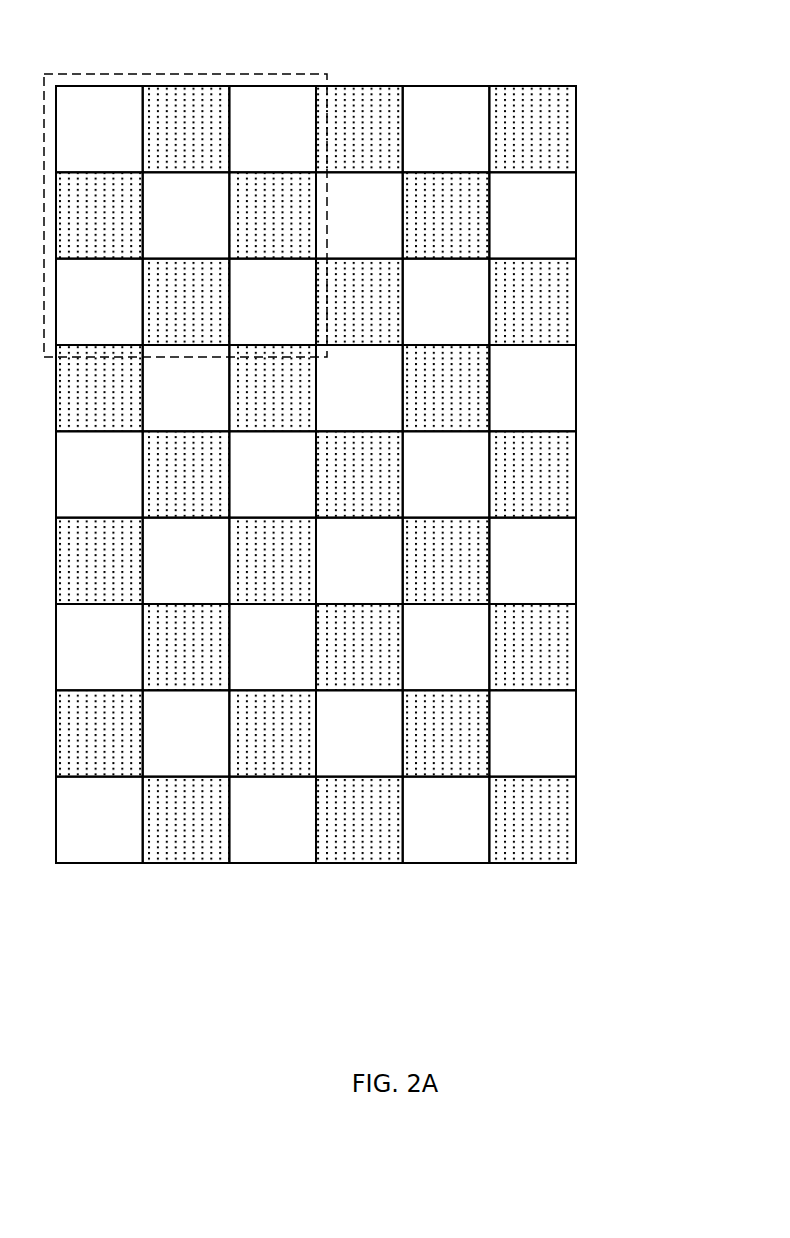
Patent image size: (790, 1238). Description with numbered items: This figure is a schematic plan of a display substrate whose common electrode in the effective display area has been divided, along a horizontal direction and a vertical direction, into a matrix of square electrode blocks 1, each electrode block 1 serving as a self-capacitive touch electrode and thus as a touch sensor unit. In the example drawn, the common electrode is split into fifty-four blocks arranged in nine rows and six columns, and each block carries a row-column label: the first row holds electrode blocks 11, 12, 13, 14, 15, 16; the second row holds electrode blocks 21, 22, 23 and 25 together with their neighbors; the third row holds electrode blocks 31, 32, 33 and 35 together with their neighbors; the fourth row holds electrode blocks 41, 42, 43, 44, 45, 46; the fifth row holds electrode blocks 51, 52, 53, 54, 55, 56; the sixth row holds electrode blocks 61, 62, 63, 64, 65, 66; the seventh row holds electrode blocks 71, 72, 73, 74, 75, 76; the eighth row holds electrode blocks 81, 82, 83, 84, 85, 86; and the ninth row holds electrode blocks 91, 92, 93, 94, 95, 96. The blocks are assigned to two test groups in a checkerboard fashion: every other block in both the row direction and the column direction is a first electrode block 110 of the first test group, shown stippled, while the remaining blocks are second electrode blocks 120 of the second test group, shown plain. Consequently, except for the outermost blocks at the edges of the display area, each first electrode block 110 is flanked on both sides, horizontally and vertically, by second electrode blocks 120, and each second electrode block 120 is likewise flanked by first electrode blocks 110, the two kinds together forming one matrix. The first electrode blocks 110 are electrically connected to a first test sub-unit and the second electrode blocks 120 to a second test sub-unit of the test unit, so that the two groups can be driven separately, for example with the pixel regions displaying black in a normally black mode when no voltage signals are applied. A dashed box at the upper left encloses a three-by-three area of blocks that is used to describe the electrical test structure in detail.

The electrode block 1 is at (446, 90).
The first electrode block 110 is at (596, 248).
The second electrode block 120 is at (596, 504).
The pixel 11 is at (99, 129).
The pixel 12 is at (186, 129).
The pixel 13 is at (272, 129).
The pixel 14 is at (359, 129).
The pixel 15 is at (446, 129).
The pixel 16 is at (532, 129).
The pixel 21 is at (99, 215).
The pixel 22 is at (186, 215).
The pixel 23 is at (272, 215).
The pixel 25 is at (446, 215).
The pixel 31 is at (99, 302).
The pixel 32 is at (186, 302).
The pixel 33 is at (272, 302).
The pixel 35 is at (446, 302).
The pixel 41 is at (99, 388).
The pixel 42 is at (186, 388).
The pixel 43 is at (272, 388).
The pixel 44 is at (359, 388).
The pixel 45 is at (446, 388).
The pixel 46 is at (532, 388).
The pixel 51 is at (99, 474).
The pixel 52 is at (186, 474).
The pixel 53 is at (272, 474).
The pixel 54 is at (359, 474).
The pixel 55 is at (446, 474).
The pixel 56 is at (532, 474).
The pixel 61 is at (99, 561).
The pixel 62 is at (186, 561).
The pixel 63 is at (272, 561).
The pixel 64 is at (359, 561).
The pixel 65 is at (446, 561).
The pixel 66 is at (532, 561).
The pixel 71 is at (99, 647).
The pixel 72 is at (186, 647).
The pixel 73 is at (272, 647).
The pixel 74 is at (359, 647).
The pixel 75 is at (446, 647).
The pixel 76 is at (532, 647).
The pixel 81 is at (99, 733).
The pixel 82 is at (186, 733).
The pixel 83 is at (272, 733).
The pixel 84 is at (359, 733).
The pixel 85 is at (446, 733).
The pixel 86 is at (532, 733).
The pixel 91 is at (99, 820).
The pixel 92 is at (186, 820).
The pixel 93 is at (272, 820).
The pixel 94 is at (359, 820).
The pixel 95 is at (446, 820).
The pixel 96 is at (532, 820).